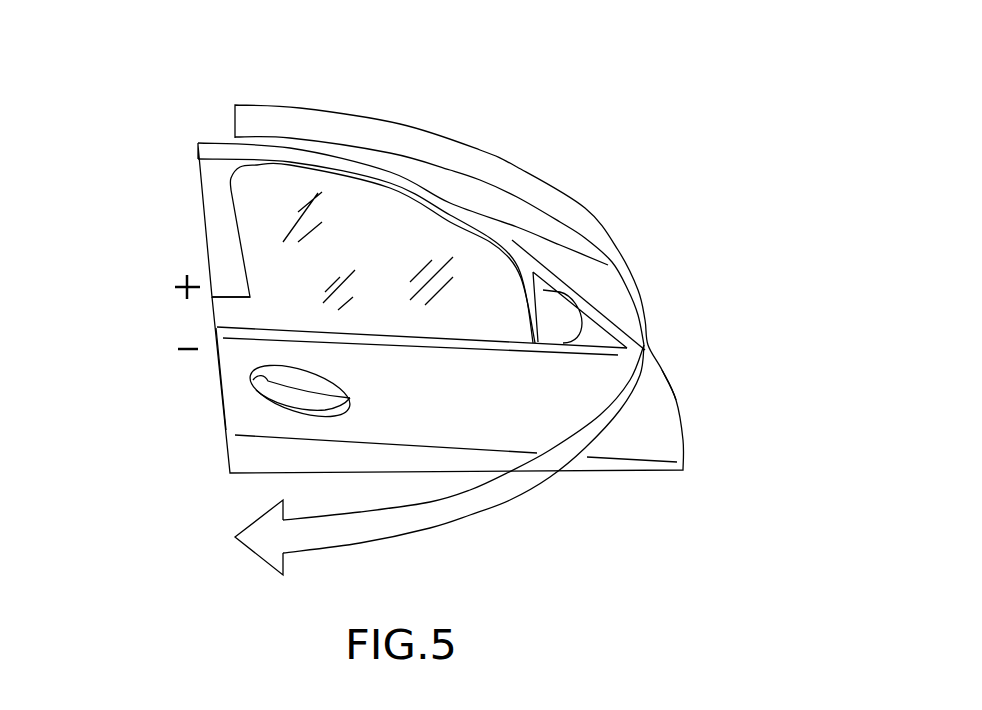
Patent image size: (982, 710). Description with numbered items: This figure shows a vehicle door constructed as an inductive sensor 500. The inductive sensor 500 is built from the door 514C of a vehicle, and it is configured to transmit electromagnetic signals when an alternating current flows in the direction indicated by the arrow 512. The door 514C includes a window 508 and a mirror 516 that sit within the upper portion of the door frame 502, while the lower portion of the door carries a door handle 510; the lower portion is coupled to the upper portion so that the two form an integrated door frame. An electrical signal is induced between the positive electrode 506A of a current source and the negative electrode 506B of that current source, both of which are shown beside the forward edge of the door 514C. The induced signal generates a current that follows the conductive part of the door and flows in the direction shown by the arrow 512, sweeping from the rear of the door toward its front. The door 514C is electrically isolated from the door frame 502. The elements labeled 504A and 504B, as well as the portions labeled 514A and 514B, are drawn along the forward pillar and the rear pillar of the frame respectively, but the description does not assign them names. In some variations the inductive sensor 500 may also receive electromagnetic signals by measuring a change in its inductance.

The inductive sensor 500 is at (680, 56).
The door frame 502 is at (726, 392).
The first hinge 504A is at (233, 292).
The second hinge 504B is at (222, 403).
The positive electrode 506A is at (173, 272).
The negative electrode 506B is at (185, 358).
The window 508 is at (404, 195).
The door handle 510 is at (317, 395).
The arrow 512 is at (480, 492).
The front pillar frame portion 514A is at (216, 175).
The rear pillar frame portion 514B is at (483, 233).
The door 514C is at (503, 409).
The mirror 516 is at (563, 312).